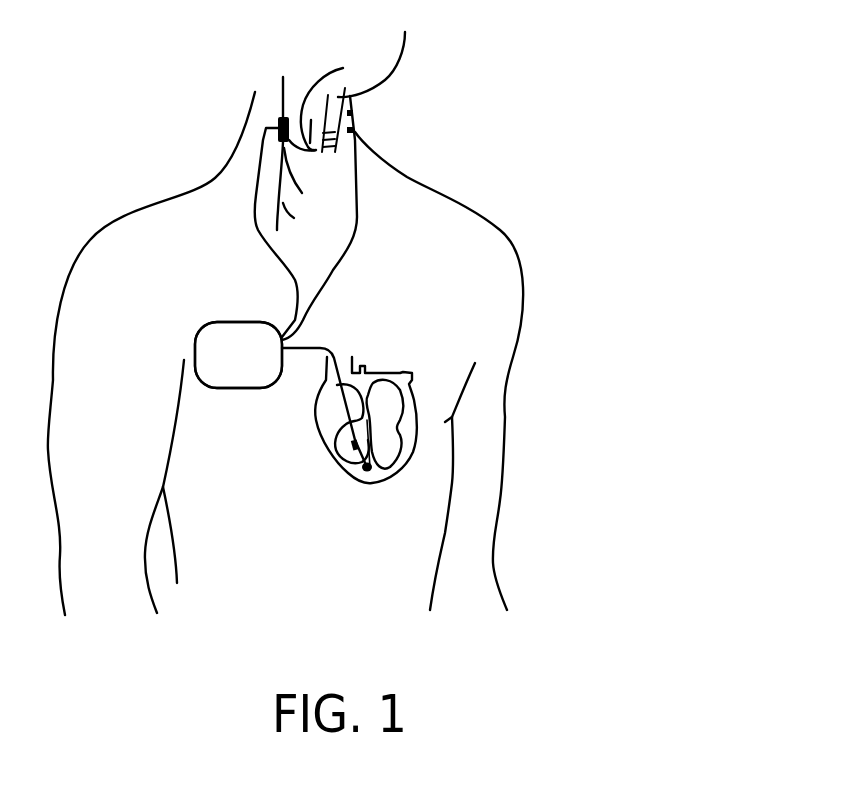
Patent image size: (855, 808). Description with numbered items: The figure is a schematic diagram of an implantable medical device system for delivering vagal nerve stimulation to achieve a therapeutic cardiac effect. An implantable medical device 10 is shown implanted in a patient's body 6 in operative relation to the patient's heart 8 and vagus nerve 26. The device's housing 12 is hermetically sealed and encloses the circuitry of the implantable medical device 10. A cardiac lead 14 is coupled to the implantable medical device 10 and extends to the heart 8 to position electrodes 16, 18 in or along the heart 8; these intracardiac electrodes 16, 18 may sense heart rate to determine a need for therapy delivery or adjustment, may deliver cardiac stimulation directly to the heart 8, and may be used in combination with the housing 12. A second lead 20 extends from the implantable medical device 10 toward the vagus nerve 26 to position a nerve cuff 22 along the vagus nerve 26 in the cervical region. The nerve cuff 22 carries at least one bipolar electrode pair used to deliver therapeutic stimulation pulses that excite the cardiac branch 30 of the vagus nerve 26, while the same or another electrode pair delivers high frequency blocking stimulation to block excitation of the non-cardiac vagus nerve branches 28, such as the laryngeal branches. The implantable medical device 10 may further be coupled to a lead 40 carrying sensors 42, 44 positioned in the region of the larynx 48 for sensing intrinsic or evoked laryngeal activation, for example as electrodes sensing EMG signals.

The patient's body 6 is at (505, 232).
The heart 8 is at (408, 465).
The implantable medical device 10 is at (230, 323).
The housing 12 is at (253, 391).
The cardiac lead 14 is at (323, 348).
The electrode 16 is at (355, 446).
The electrode 18 is at (369, 472).
The lead 20 is at (292, 322).
The nerve cuff 22 is at (279, 130).
The vagus nerve 26 is at (284, 83).
The non-cardiac vagus nerve branches 28 is at (333, 100).
The cardiac branch 30 is at (283, 205).
The lead 40 is at (353, 233).
The sensor 42 is at (352, 112).
The sensor 44 is at (352, 129).
The larynx 48 is at (376, 51).